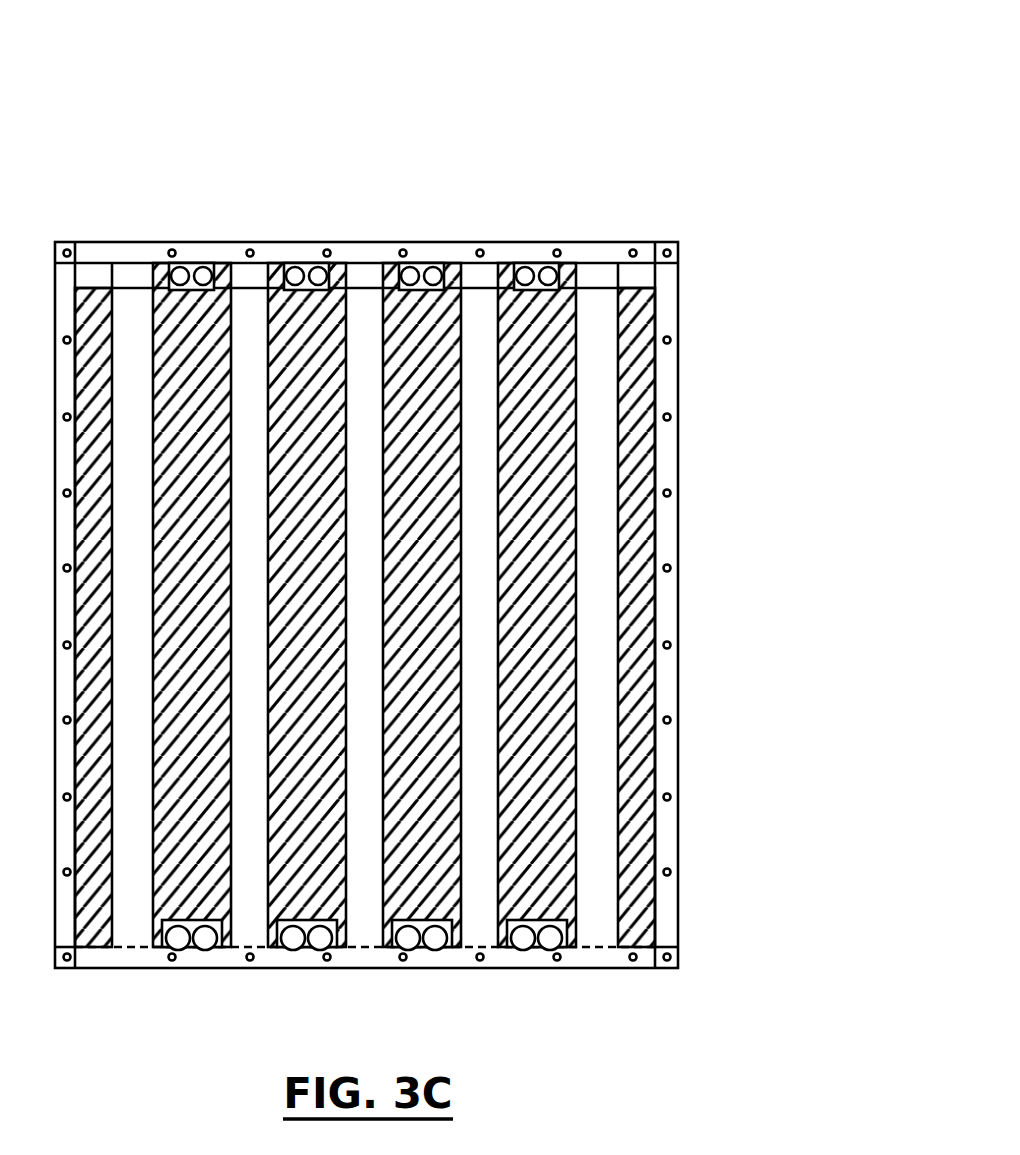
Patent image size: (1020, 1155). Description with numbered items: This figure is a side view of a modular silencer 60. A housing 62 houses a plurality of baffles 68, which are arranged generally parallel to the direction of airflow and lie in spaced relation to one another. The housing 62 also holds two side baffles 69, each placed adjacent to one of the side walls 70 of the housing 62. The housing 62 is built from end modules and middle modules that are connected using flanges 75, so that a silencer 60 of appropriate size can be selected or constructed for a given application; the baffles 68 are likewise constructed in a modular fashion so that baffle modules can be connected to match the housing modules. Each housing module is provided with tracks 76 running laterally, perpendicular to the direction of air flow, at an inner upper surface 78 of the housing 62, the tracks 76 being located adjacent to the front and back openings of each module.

The silencer 60 is at (359, 135).
The housing 62 is at (177, 232).
The flanges 75 is at (576, 242).
The side walls 70 is at (656, 812).
The inner upper surface 78 is at (638, 265).
The tracks 76 is at (638, 289).
The side baffles 69 is at (611, 893).
The baffles 68 is at (232, 893).